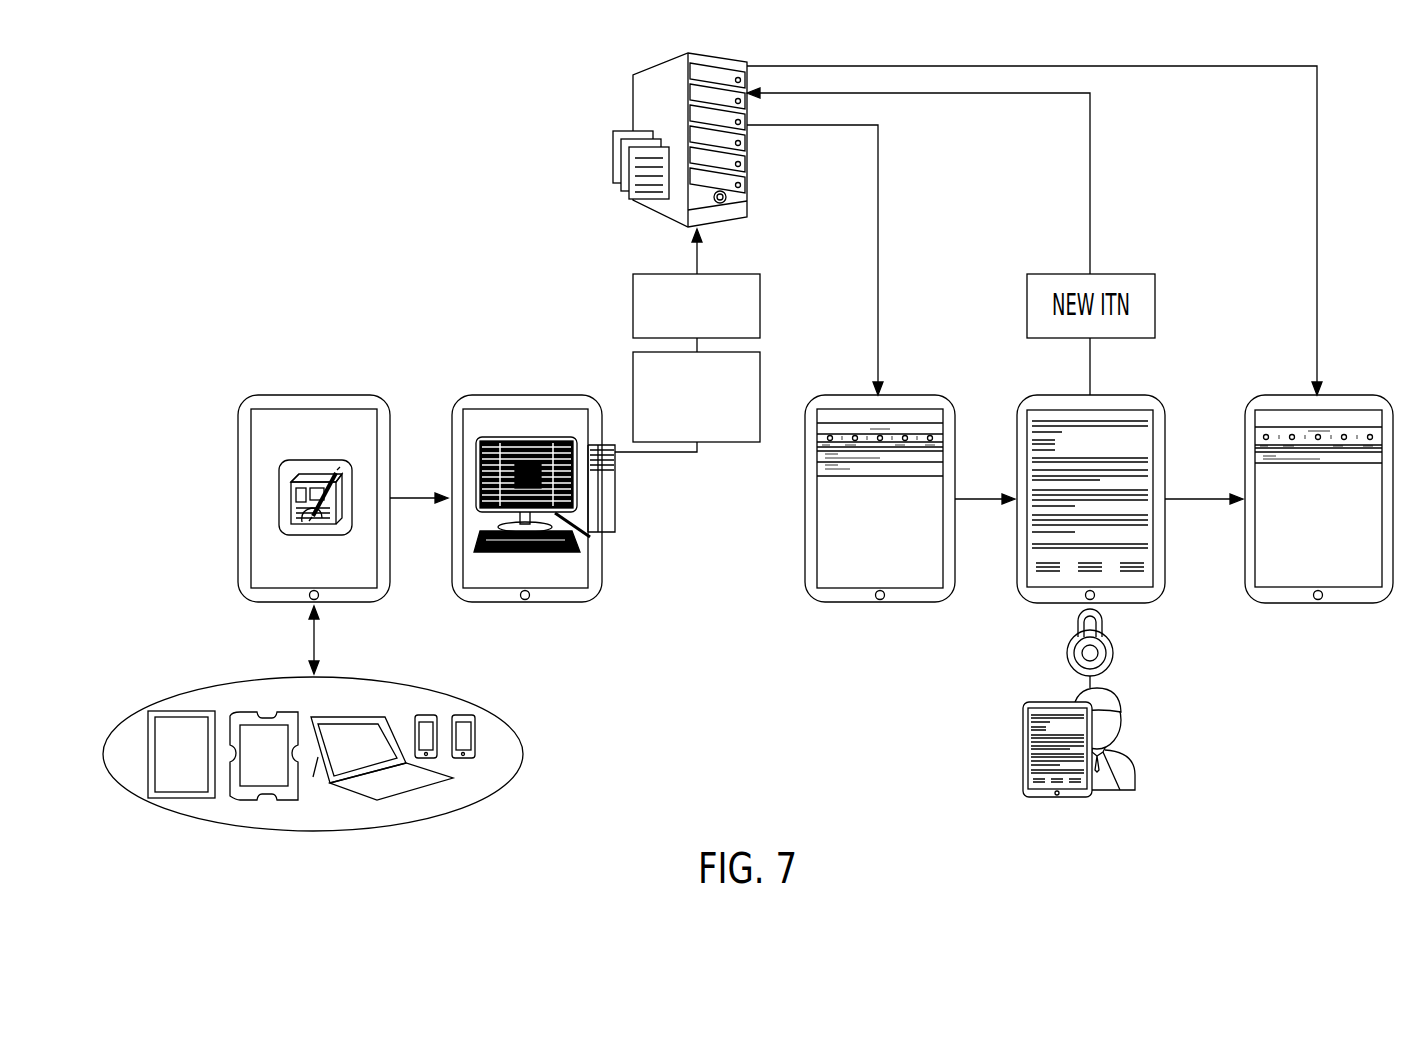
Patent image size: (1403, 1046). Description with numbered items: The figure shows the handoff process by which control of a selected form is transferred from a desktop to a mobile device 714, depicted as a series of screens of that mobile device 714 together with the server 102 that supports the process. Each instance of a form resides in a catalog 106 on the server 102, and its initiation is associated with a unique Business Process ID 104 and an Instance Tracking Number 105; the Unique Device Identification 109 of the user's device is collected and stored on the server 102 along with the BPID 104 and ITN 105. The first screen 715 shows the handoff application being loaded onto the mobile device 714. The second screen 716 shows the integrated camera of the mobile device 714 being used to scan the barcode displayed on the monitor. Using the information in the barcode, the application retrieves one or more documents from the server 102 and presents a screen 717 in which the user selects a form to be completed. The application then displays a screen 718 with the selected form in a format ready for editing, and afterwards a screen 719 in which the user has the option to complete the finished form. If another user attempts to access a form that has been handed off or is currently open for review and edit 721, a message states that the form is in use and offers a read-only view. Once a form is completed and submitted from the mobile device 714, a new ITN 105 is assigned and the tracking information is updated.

The server 102 is at (633, 90).
The catalog 106 is at (613, 160).
The Business Process ID (BPID) 104 is at (646, 303).
The Instance Tracking Number (ITN) 105 is at (748, 303).
The Unique Device Identification (UDID) 109 is at (633, 388).
The mobile device 714 is at (240, 436).
The first screen 715 is at (262, 528).
The second screen 716 is at (515, 478).
The screen 717 is at (826, 531).
The screen 718 is at (1022, 397).
The screen 719 is at (1265, 395).
The form open for review and edit 721 is at (1022, 763).